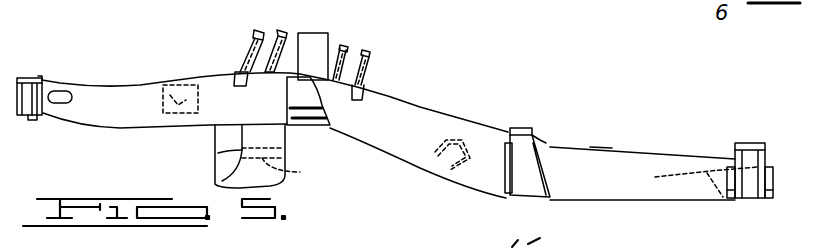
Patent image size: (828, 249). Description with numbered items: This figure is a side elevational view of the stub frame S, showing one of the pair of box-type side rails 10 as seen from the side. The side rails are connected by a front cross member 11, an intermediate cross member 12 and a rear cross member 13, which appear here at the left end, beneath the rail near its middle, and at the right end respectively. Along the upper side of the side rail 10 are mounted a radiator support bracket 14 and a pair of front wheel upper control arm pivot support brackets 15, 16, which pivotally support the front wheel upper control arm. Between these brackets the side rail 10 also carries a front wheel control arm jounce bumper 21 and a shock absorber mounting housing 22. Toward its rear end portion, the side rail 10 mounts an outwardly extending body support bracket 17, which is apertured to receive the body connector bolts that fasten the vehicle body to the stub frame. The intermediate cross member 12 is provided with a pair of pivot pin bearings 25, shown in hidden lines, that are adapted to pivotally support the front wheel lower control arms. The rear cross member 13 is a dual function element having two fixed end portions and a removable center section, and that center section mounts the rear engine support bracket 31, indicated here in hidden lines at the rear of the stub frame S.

The side rail 10 is at (93, 86).
The front cross member 11 is at (25, 77).
The intermediate cross member 12 is at (225, 160).
The rear cross member 13 is at (757, 142).
The radiator support bracket 14 is at (197, 76).
The front wheel upper control arm pivot support bracket 15 is at (250, 55).
The front wheel upper control arm pivot support bracket 16 is at (368, 78).
The body support bracket 17 is at (540, 134).
The front wheel control arm jounce bumper 21 is at (290, 103).
The shock absorber mounting housing 22 is at (308, 39).
The pivot pin bearing 25 is at (287, 169).
The rear engine support bracket 31 is at (687, 182).
The stub frame S is at (604, 149).